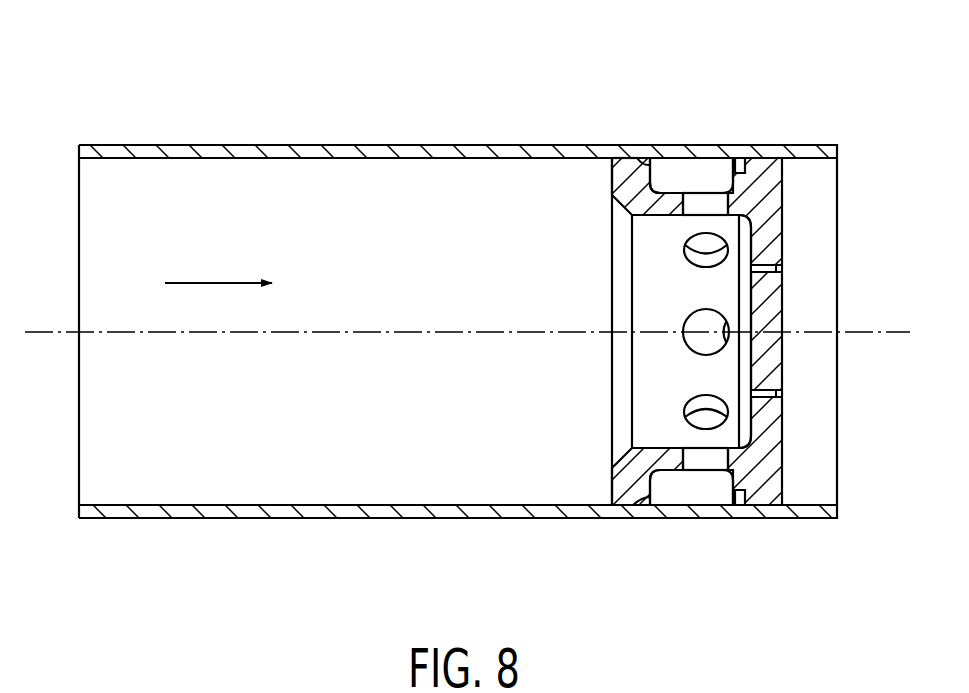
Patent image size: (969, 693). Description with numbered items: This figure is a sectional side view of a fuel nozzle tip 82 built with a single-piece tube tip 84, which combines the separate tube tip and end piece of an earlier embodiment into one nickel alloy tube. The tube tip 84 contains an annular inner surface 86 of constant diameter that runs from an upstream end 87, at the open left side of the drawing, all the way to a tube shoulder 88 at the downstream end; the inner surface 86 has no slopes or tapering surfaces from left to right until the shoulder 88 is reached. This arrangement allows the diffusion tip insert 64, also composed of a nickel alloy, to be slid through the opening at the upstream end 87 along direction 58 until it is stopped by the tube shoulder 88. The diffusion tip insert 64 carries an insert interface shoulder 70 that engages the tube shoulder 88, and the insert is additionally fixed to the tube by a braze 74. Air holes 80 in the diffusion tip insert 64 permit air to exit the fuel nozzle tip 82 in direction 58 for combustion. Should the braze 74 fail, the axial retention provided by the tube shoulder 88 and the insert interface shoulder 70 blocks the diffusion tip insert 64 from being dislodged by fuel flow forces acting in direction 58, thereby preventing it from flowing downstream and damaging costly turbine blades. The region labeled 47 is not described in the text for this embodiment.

The fuel nozzle tip 82 is at (366, 56).
The tube tip 84 is at (773, 152).
The inner surface 86 is at (513, 503).
The upstream end 87 is at (90, 512).
The direction 58 is at (218, 282).
The diffusion tip insert 64 is at (772, 480).
The insert interface shoulder 70 is at (661, 165).
The air holes 80 is at (780, 393).
The engagement tooth 47 is at (648, 142).
The tube shoulder 88 is at (640, 160).
The braze 74 is at (638, 506).